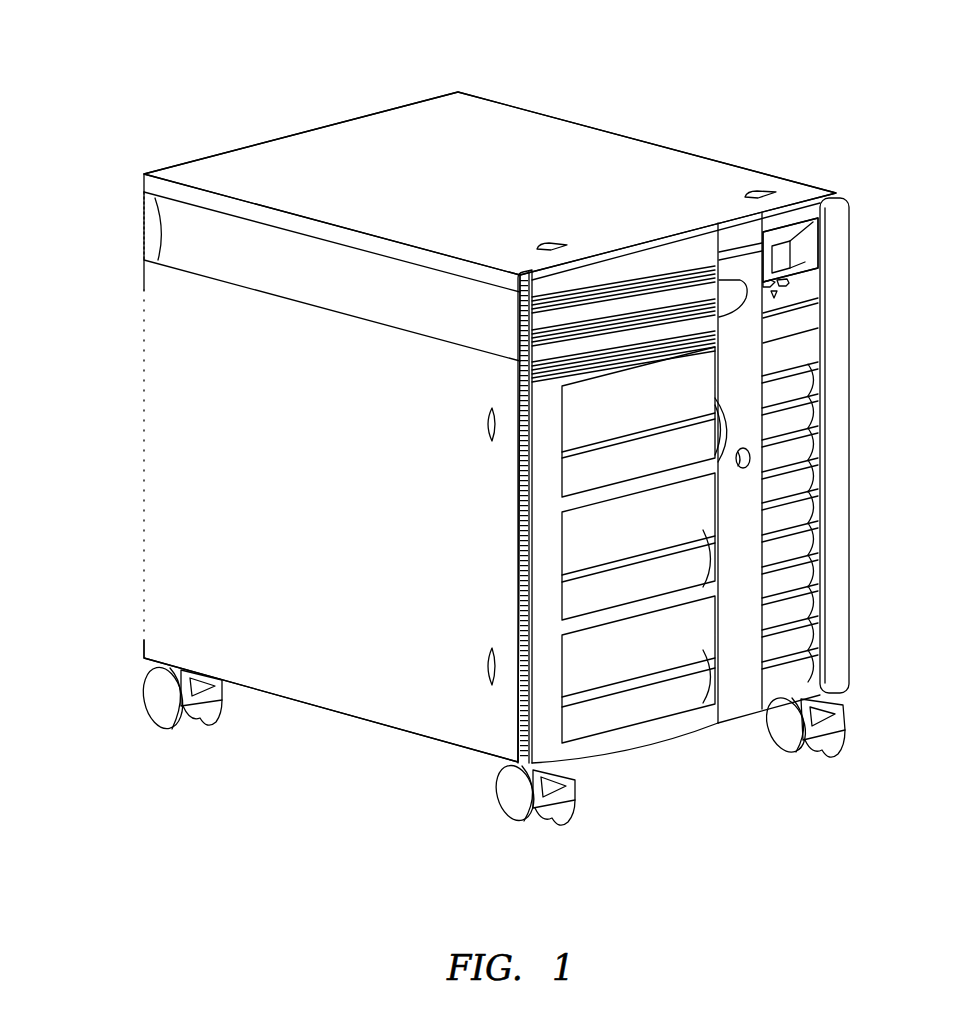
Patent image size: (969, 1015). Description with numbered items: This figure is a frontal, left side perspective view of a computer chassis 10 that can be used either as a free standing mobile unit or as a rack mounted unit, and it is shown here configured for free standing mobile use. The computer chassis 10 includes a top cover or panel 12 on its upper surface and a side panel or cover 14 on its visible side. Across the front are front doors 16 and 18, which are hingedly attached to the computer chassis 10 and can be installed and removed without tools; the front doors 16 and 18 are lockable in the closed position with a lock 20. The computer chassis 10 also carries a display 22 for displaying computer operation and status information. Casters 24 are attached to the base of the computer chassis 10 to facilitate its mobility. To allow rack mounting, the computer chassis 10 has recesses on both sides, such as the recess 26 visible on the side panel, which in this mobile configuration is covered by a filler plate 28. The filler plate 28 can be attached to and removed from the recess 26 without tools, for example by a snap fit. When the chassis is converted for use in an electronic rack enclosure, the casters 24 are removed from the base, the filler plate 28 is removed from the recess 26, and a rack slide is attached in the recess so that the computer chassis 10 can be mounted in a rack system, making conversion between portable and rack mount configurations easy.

The computer chassis 10 is at (816, 86).
The top cover or panel 12 is at (477, 203).
The side panel or cover 14 is at (309, 533).
The front door 16 is at (840, 438).
The front door 18 is at (643, 740).
The lock 20 is at (743, 469).
The display 22 is at (791, 287).
The casters 24 is at (162, 707).
The recess 26 is at (153, 220).
The filler plate 28 is at (178, 258).